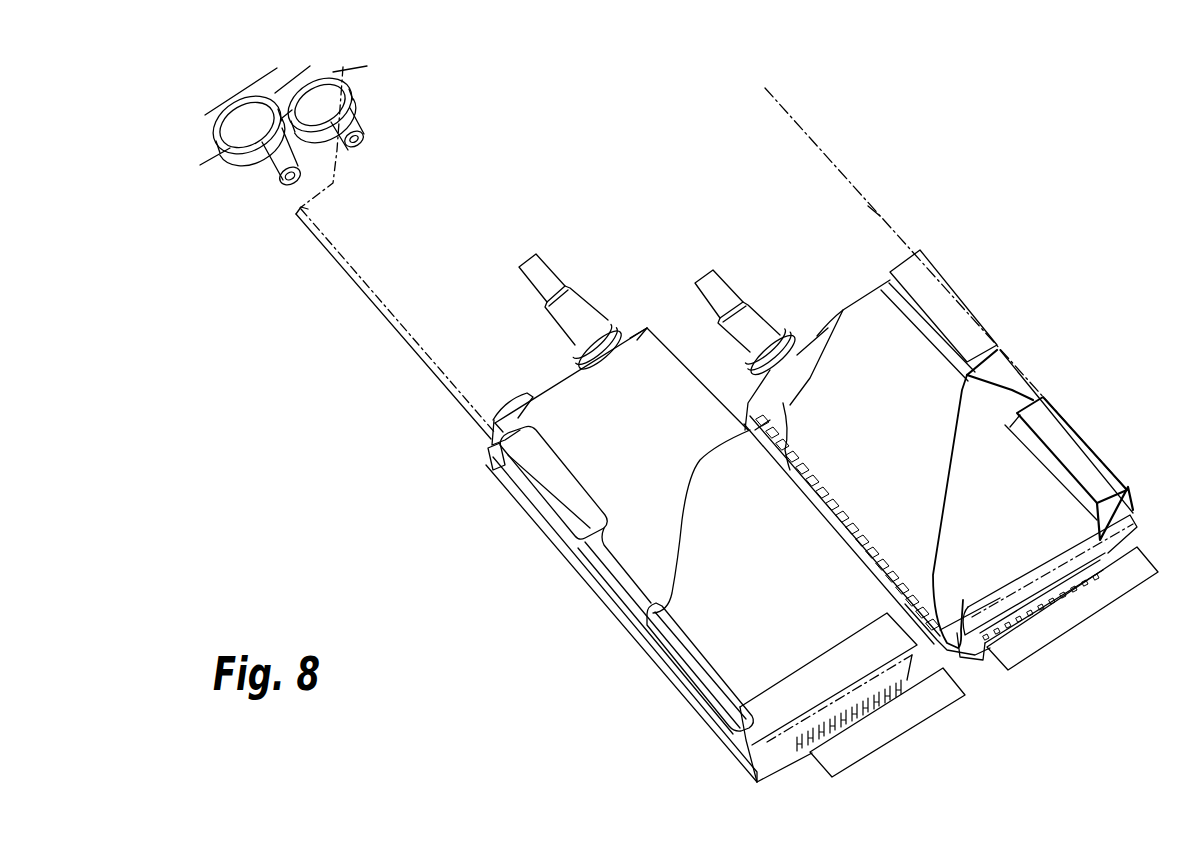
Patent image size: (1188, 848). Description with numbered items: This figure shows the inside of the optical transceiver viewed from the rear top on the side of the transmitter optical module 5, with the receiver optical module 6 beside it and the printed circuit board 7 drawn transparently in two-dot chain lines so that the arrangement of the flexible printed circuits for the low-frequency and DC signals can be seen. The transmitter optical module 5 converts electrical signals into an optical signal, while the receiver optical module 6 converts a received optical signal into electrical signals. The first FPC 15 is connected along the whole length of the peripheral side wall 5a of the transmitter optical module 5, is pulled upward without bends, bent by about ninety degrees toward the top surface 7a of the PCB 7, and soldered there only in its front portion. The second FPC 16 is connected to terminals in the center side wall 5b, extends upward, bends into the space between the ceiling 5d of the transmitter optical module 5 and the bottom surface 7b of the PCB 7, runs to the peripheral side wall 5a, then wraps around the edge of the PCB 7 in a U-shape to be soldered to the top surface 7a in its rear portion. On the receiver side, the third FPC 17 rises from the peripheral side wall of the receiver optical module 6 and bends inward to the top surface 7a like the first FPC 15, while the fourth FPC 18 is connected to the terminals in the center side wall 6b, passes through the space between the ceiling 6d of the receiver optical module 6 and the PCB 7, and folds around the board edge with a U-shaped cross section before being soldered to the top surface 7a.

The transmitter optical module 5 is at (556, 386).
The peripheral side wall 5a is at (490, 445).
The center side wall 5b is at (670, 350).
The ceiling 5d is at (643, 357).
The receiver optical module 6 is at (817, 337).
The center side wall 6b is at (768, 405).
The ceiling 6d is at (1050, 535).
The printed circuit board 7 is at (872, 209).
The top surface 7a is at (817, 173).
The bottom surface 7b is at (443, 383).
The first FPC 15 is at (545, 498).
The second FPC 16 is at (673, 672).
The third FPC 17 is at (1073, 433).
The fourth FPC 18 is at (967, 313).